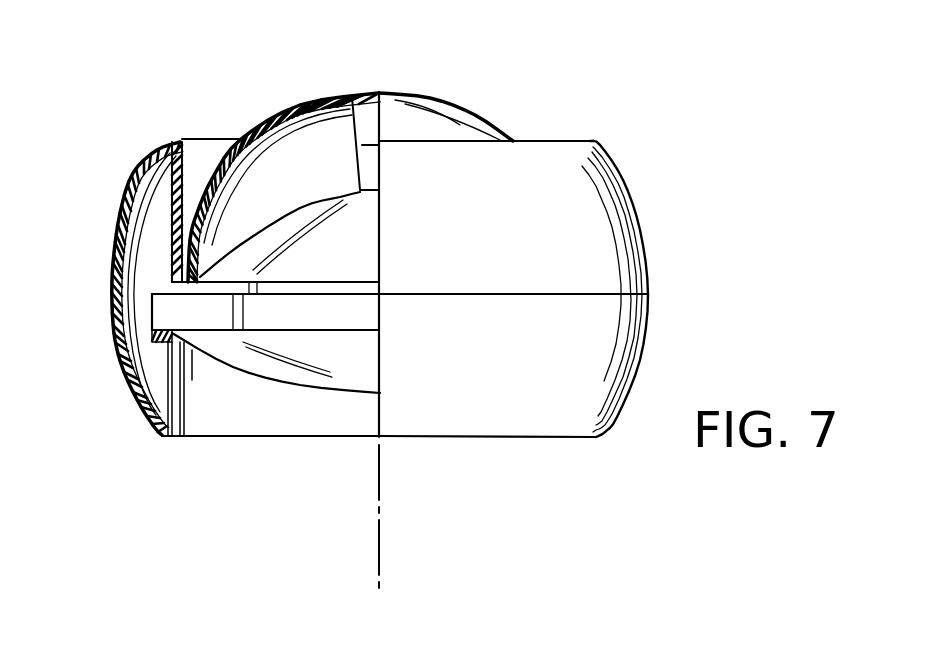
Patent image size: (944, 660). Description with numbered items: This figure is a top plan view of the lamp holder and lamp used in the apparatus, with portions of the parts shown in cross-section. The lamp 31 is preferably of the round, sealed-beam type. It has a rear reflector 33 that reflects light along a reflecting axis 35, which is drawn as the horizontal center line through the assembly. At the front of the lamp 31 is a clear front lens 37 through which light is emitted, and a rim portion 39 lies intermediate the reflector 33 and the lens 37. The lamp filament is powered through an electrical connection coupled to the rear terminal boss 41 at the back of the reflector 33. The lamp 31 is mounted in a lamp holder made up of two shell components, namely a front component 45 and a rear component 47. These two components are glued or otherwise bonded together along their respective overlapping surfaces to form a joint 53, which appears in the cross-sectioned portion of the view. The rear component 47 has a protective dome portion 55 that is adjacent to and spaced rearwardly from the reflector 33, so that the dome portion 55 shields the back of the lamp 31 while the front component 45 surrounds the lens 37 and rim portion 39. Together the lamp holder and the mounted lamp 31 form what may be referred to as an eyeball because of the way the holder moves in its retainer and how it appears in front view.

The lamp 31 is at (350, 407).
The rear reflector 33 is at (303, 203).
The reflecting axis 35 is at (382, 498).
The clear front lens 37 is at (288, 383).
The rim portion 39 is at (352, 318).
The rear terminal boss 41 is at (352, 97).
The front component 45 is at (147, 415).
The rear component 47 is at (133, 193).
The joint 53 is at (110, 308).
The protective dome portion 55 is at (323, 97).